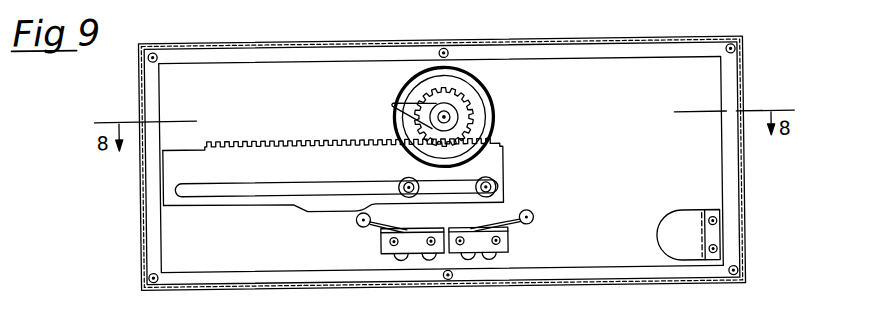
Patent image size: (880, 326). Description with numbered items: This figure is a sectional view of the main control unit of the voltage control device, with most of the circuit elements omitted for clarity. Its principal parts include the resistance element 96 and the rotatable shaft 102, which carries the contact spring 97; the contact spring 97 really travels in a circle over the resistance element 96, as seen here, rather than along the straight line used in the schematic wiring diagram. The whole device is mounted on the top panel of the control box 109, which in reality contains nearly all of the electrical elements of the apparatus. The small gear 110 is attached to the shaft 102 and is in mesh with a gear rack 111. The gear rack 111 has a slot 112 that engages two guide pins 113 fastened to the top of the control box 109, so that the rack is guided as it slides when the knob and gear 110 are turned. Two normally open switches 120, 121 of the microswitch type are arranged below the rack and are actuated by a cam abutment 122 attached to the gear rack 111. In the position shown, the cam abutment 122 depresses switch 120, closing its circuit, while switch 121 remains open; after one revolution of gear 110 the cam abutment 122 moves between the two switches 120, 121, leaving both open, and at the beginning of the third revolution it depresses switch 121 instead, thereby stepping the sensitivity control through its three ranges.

The resistance element 96 is at (411, 72).
The contact spring 97 is at (390, 103).
The rotatable shaft 102 is at (457, 109).
The control box 109 is at (748, 104).
The small gear 110 is at (481, 117).
The gear rack 111 is at (228, 138).
The slot 112 is at (231, 181).
The guide pins 113 is at (405, 178).
The switch 120 is at (403, 228).
The switch 121 is at (457, 228).
The cam abutment 122 is at (316, 208).